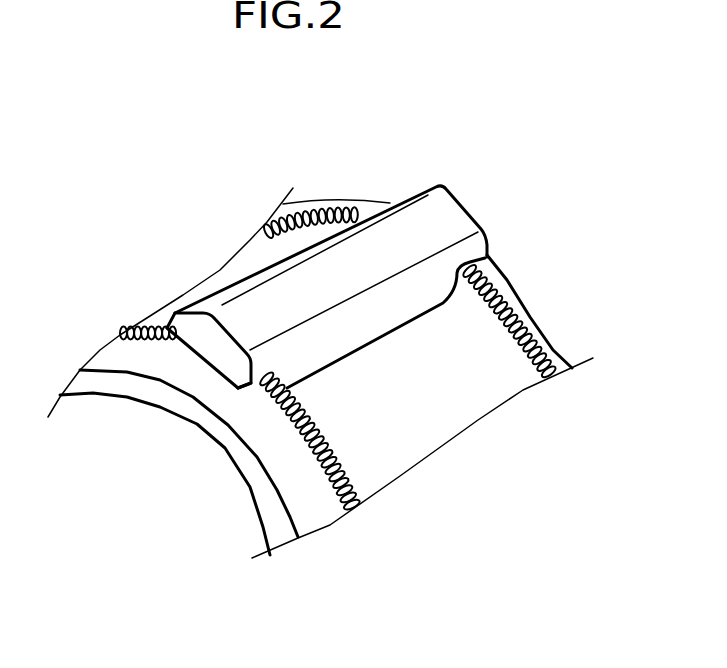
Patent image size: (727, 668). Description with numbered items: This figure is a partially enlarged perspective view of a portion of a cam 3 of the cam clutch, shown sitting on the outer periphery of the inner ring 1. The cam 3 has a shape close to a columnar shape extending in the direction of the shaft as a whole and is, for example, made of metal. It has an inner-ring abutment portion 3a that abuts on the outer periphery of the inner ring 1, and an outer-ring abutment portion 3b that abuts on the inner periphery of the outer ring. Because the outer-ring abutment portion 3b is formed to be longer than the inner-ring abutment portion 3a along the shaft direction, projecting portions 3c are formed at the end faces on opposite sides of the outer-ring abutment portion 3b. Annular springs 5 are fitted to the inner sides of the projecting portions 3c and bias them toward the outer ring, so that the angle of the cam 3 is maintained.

The inner ring 1 is at (257, 482).
The cam 3 is at (403, 228).
The inner-ring abutment portion 3a is at (242, 385).
The outer-ring abutment portion 3b is at (193, 330).
The projecting portion 3c is at (193, 353).
The spring 5 is at (337, 485).